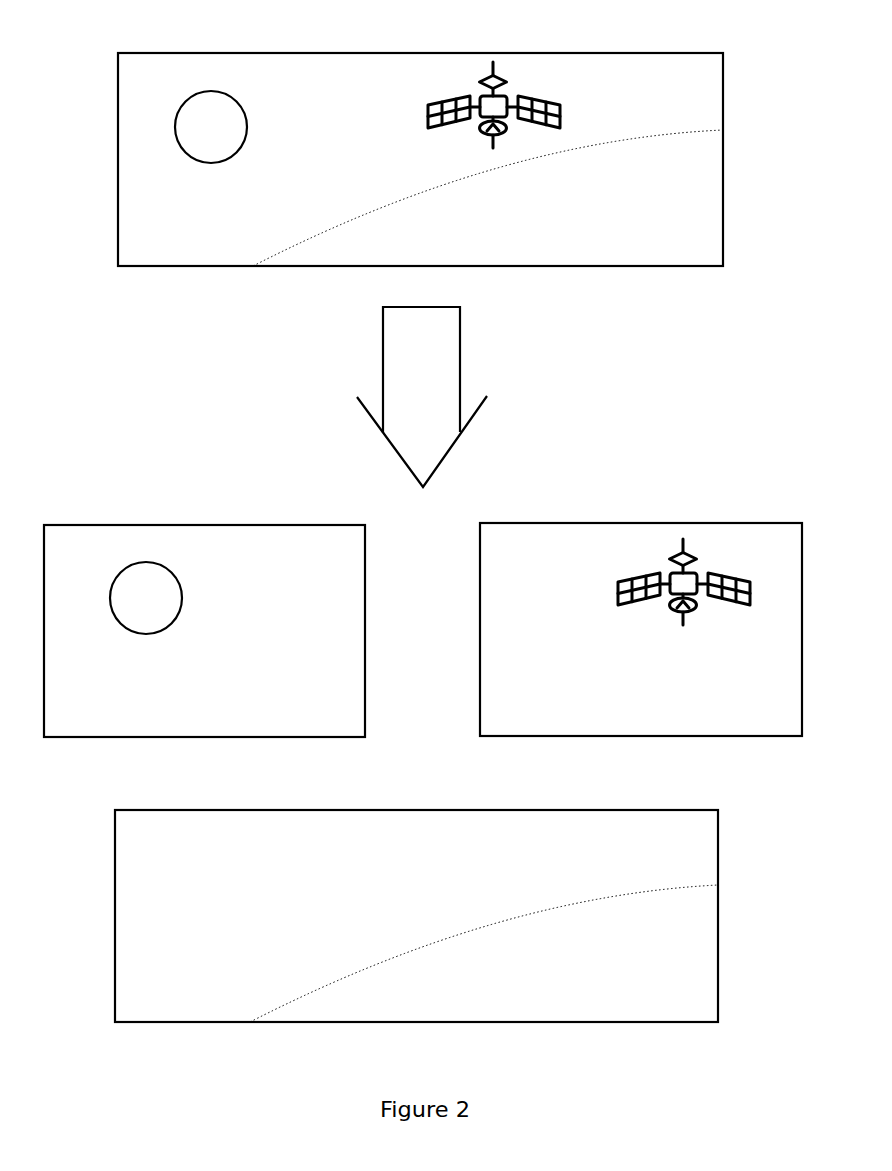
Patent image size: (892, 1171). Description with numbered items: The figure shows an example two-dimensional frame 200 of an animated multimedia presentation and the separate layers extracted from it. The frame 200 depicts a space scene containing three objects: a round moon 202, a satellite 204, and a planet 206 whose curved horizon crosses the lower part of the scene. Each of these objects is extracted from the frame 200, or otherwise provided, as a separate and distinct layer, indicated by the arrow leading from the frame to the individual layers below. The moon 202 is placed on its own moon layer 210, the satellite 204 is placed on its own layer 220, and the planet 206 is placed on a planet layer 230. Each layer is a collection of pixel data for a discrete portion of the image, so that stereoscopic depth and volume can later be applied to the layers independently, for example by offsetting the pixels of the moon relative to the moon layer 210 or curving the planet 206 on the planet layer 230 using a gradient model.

The 2-D frame 200 is at (398, 52).
The moon 202 is at (197, 148).
The satellite 204 is at (502, 73).
The planet 206 is at (688, 180).
The moon layer 210 is at (219, 524).
The second image layer 220 is at (668, 522).
The planet layer 230 is at (476, 809).